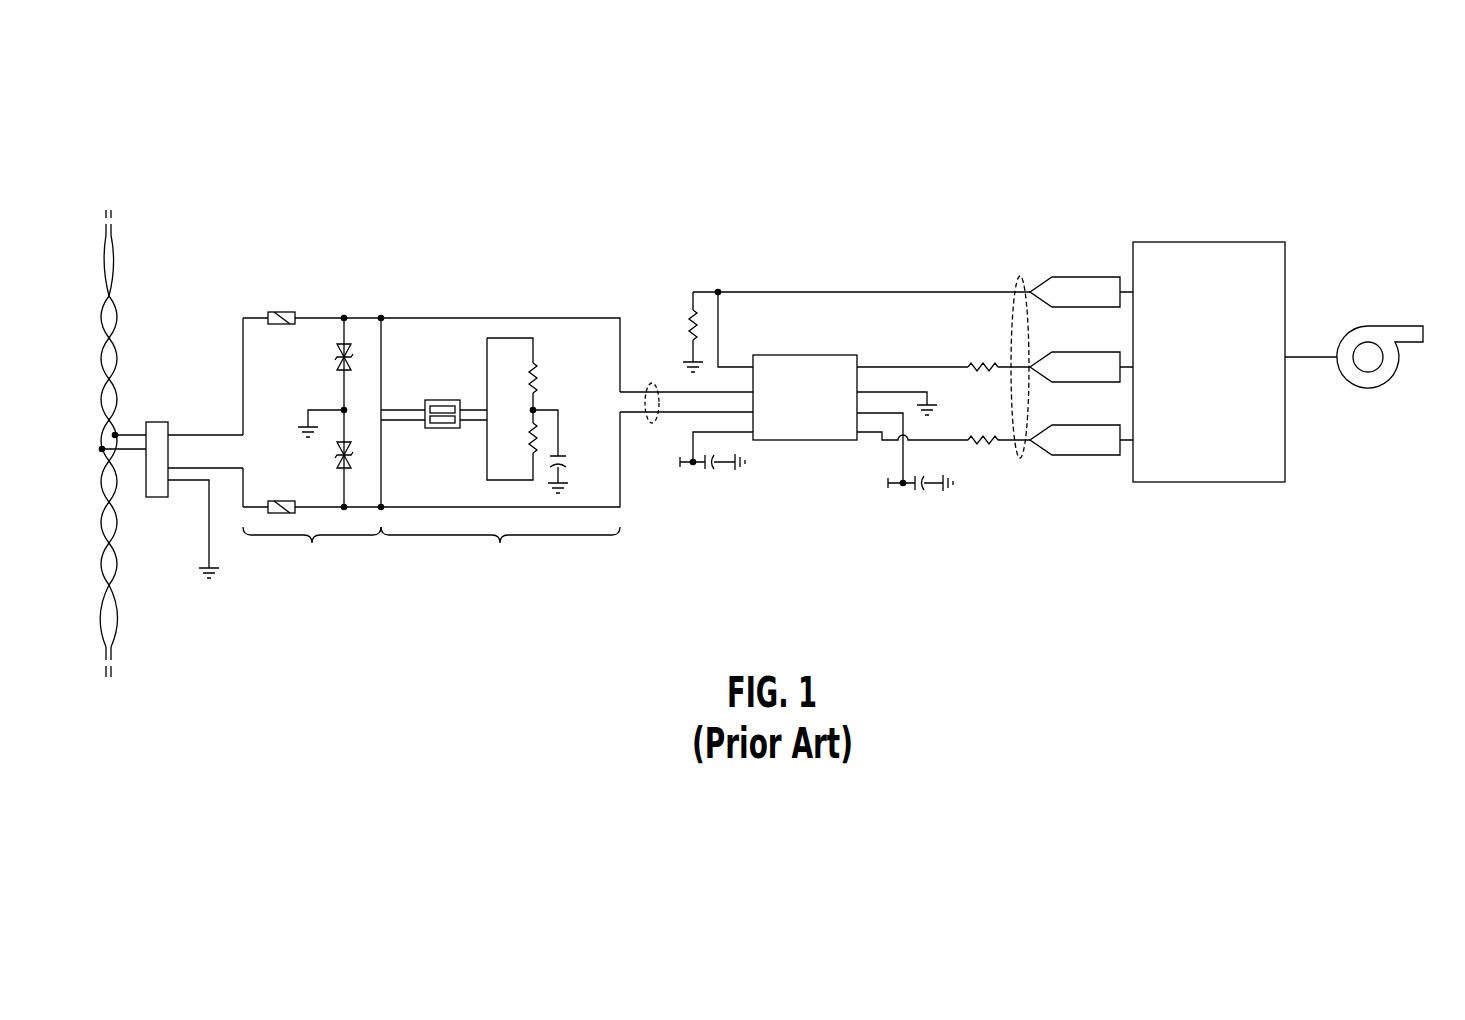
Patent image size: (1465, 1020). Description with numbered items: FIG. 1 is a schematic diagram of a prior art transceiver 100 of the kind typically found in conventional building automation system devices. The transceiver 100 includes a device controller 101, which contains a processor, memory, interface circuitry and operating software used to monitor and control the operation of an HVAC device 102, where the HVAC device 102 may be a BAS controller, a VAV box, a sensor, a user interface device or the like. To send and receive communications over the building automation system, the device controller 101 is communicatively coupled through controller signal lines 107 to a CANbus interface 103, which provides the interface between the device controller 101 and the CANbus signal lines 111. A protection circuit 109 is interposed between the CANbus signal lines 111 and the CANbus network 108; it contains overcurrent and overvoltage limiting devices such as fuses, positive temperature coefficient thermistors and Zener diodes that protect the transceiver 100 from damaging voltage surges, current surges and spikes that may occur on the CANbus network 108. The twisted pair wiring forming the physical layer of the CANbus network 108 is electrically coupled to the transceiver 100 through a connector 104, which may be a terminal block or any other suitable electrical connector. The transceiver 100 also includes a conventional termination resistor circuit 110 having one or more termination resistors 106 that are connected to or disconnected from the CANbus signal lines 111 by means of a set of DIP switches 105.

The RS-485 transceiver 100 is at (596, 200).
The device controller 101 is at (1192, 242).
The HVAC device 102 is at (1369, 325).
The CANbus interface 103 is at (818, 354).
The connector 104 is at (138, 421).
The DIP switches 105 is at (445, 399).
The termination resistors 106 is at (556, 370).
The controller signal lines 107 is at (1015, 271).
The CANbus network 108 is at (128, 620).
The protection circuit 109 is at (312, 444).
The termination resistor circuit 110 is at (499, 417).
The CANbus signal lines 111 is at (835, 332).